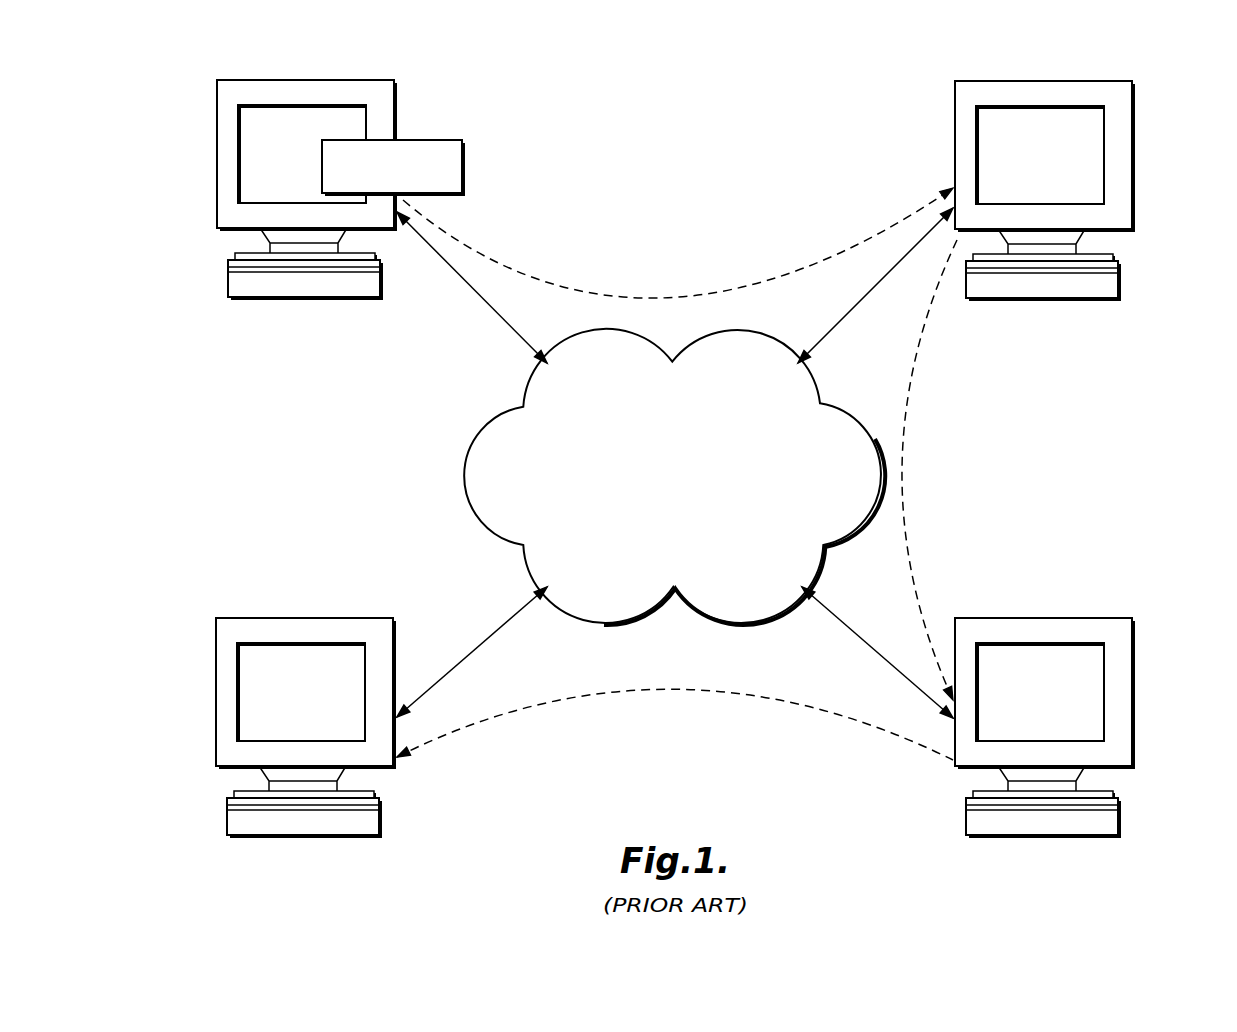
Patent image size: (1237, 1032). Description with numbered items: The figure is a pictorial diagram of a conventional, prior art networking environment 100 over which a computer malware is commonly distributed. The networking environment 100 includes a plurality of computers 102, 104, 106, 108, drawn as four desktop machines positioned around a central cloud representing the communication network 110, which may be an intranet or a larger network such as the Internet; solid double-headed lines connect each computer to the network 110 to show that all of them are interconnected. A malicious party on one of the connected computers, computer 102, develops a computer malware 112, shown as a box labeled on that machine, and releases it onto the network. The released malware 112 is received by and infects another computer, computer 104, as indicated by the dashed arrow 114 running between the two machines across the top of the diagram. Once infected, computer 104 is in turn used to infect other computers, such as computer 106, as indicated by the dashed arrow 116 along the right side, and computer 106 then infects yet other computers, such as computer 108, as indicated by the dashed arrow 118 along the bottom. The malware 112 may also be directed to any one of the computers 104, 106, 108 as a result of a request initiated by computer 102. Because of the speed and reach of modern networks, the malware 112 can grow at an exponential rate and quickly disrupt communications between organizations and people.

The networking environment 100 is at (642, 113).
The computer 102 is at (217, 157).
The computer 104 is at (1135, 165).
The computer 106 is at (1135, 723).
The computer 108 is at (216, 713).
The communication network 110 is at (463, 455).
The computer malware 112 is at (462, 158).
The arrow 114 is at (657, 295).
The arrow 116 is at (902, 477).
The arrow 118 is at (672, 690).